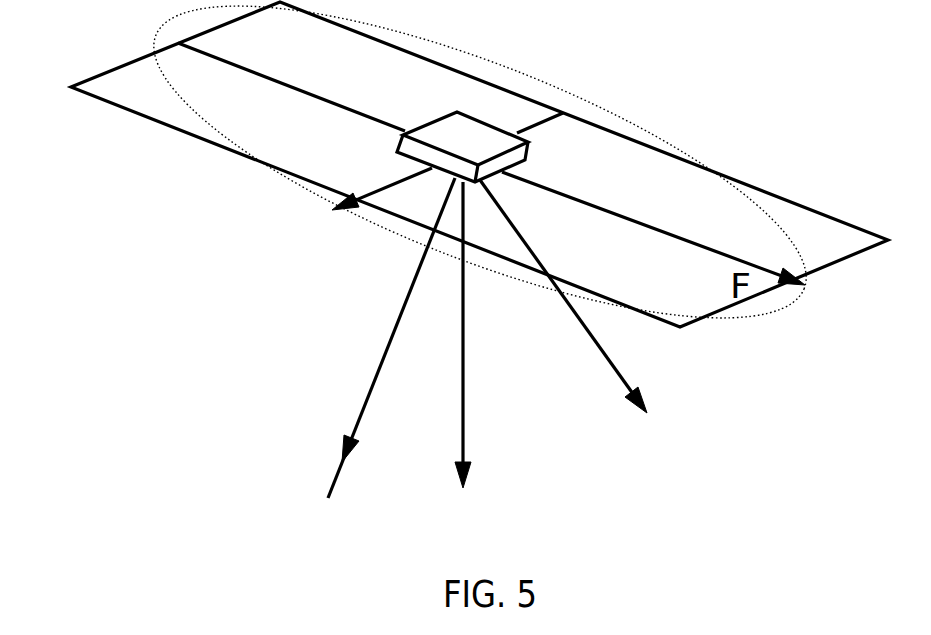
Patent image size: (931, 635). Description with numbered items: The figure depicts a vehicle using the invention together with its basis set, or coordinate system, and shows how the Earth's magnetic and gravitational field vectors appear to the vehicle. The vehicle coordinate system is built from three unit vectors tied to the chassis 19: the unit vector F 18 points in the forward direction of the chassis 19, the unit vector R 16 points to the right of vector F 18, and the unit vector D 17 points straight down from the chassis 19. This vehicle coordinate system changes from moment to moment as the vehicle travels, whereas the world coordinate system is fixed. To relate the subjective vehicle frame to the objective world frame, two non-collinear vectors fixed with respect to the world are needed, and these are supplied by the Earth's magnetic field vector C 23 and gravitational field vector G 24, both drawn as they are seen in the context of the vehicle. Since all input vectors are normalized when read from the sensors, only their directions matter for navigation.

The unit vector R 16 is at (390, 182).
The unit vector D 17 is at (373, 372).
The unit vector F 18 is at (663, 232).
The chassis 19 is at (462, 137).
The magnetic field vector C 23 is at (598, 340).
The gravitational field vector G 24 is at (463, 353).